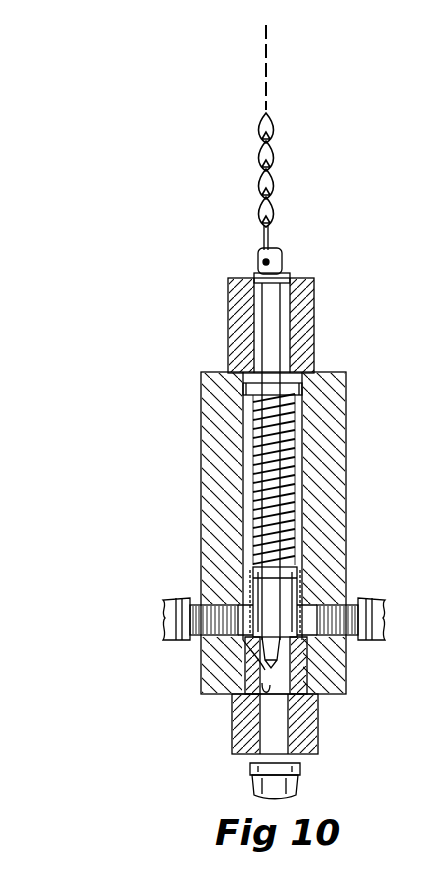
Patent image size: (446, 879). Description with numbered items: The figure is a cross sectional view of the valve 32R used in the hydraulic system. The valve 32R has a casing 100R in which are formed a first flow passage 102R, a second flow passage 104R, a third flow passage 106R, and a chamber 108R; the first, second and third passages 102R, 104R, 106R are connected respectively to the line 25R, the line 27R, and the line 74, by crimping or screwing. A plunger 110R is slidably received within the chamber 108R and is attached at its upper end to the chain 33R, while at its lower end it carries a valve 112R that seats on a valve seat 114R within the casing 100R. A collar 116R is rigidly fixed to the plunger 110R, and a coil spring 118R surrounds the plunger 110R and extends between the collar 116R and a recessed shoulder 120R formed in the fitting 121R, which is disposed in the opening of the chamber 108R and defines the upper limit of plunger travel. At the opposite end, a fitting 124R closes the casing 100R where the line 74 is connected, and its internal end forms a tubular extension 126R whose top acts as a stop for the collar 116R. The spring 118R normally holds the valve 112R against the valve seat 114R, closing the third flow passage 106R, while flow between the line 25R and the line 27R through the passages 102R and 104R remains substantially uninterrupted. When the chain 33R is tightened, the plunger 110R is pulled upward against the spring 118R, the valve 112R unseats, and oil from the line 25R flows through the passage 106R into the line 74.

The chain 33R is at (280, 158).
The plunger 110R is at (272, 290).
The fitting 121R is at (315, 314).
The recessed shoulder 120R is at (300, 387).
The casing 100R is at (202, 478).
The coil spring 118R is at (262, 443).
The collar 116R is at (254, 570).
The tubular extension 126R is at (300, 583).
The chamber 108R is at (298, 568).
The third flow passage 106R is at (262, 690).
The valve 112R is at (316, 700).
The fitting 124R is at (319, 746).
The line 74 is at (300, 782).
The line 25R is at (162, 620).
The first flow passage 102R is at (215, 650).
The line 27R is at (386, 622).
The second flow passage 104R is at (320, 650).
The valve seat 114R is at (243, 668).
The valve 32R is at (200, 358).